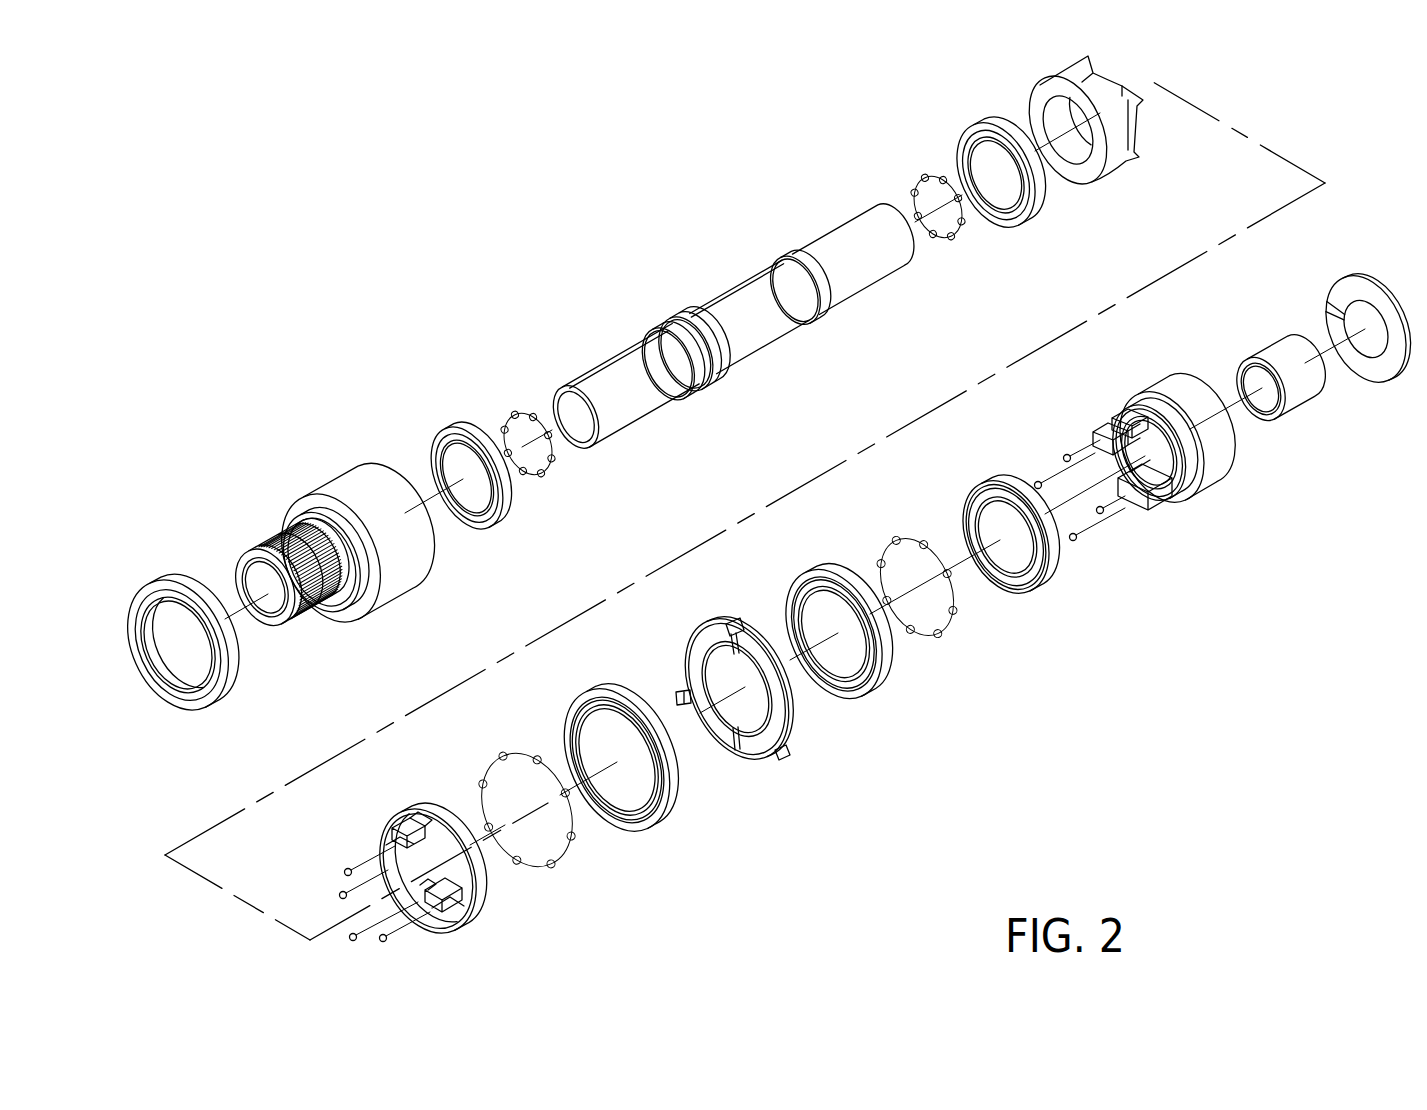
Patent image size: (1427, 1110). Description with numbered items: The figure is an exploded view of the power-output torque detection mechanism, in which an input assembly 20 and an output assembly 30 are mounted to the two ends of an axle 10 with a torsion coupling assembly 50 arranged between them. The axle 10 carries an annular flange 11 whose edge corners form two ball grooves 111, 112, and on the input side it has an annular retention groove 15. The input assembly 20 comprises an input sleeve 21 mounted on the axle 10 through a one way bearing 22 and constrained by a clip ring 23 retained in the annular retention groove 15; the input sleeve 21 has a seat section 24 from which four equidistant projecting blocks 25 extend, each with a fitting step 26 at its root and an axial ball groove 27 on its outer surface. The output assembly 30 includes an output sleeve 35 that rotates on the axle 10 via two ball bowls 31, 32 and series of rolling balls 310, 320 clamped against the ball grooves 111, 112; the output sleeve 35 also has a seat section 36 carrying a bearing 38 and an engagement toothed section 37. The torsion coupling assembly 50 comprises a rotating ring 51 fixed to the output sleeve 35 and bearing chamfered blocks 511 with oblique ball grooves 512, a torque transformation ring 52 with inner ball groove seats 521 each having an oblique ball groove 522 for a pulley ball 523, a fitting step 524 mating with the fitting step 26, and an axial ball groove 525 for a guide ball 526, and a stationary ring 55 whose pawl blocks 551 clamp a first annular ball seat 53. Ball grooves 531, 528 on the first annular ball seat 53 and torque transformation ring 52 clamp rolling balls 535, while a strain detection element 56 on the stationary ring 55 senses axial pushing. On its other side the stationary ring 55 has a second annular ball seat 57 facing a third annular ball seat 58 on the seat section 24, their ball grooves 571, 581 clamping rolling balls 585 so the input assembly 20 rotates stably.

The axle 10 is at (628, 363).
The annular flange 11 is at (678, 313).
The ball groove 111 is at (668, 313).
The ball groove 112 is at (698, 317).
The annular retention groove 15 is at (793, 257).
The input assembly 20 is at (1221, 622).
The input sleeve 21 is at (1215, 470).
The one way bearing 22 is at (1293, 402).
The clip ring 23 is at (1379, 372).
The seat section 24 is at (1180, 490).
The projecting blocks 25 is at (1150, 506).
The fitting step 26 is at (1125, 414).
The axial ball groove 27 is at (1105, 426).
The output assembly 30 is at (344, 425).
The ball bowl 31 is at (443, 440).
The rolling balls 310 is at (510, 412).
The ball bowl 32 is at (977, 125).
The rolling balls 320 is at (922, 175).
The output sleeve 35 is at (330, 486).
The seat section 36 is at (300, 528).
The engagement toothed section 37 is at (275, 550).
The bearing 38 is at (160, 583).
The torsion coupling assembly 50 is at (574, 894).
The rotating ring 51 is at (1115, 160).
The chamfered blocks 511 is at (1134, 102).
The oblique ball groove 512 is at (1087, 150).
The torque transformation ring 52 is at (418, 812).
The ball groove seats 521 is at (389, 841).
The oblique ball groove 522 is at (400, 826).
The pulley ball 523 is at (344, 871).
The fitting step 524 is at (452, 915).
The axial ball groove 525 is at (425, 912).
The guide ball 526 is at (1078, 540).
The ball groove 528 is at (432, 805).
The first annular ball seat 53 is at (607, 693).
The ball groove 531 is at (575, 720).
The rolling balls 535 is at (577, 840).
The stationary ring 55 is at (793, 720).
The pawl blocks 551 is at (788, 756).
The strain detection element 56 is at (734, 750).
The second annular ball seat 57 is at (880, 667).
The ball groove 571 is at (847, 690).
The third annular ball seat 58 is at (1050, 567).
The ball groove 581 is at (975, 505).
The rolling balls 585 is at (957, 610).